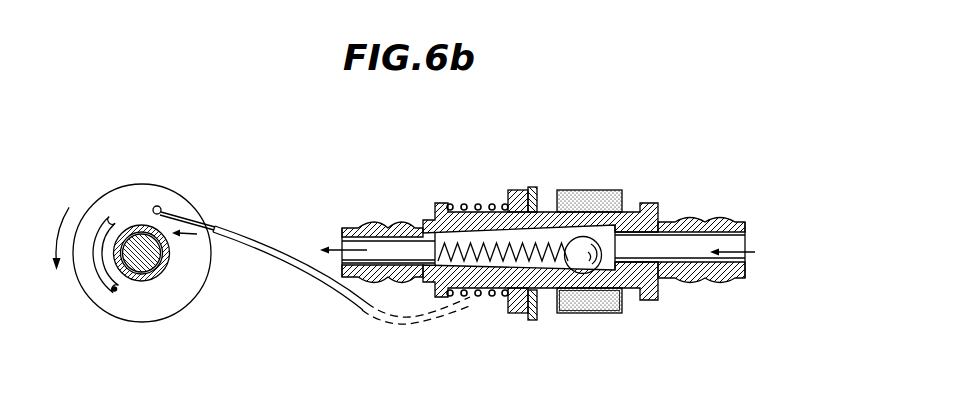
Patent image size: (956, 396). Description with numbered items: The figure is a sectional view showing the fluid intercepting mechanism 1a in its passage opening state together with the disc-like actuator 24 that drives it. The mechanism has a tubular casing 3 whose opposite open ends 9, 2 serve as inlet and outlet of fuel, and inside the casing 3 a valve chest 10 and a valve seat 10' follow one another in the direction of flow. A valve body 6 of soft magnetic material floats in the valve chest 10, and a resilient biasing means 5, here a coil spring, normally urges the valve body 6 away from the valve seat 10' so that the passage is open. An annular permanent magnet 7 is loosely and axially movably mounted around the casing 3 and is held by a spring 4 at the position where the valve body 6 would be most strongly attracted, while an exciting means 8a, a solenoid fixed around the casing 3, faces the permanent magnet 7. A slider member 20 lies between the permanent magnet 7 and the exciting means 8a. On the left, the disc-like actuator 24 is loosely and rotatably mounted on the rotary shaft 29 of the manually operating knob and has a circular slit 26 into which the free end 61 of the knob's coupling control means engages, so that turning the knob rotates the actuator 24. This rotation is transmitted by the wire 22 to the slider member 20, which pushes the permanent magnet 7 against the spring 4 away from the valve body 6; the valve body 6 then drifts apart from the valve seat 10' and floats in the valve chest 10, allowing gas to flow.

The fluid intercepting mechanism 1a is at (569, 166).
The open end 2 is at (377, 222).
The tubular casing 3 is at (430, 219).
The spring 4 is at (463, 204).
The resilient biasing means 5 is at (490, 258).
The valve body 6 is at (570, 308).
The permanent magnet 7 is at (511, 314).
The exciting means 8a is at (610, 192).
The open end 9 is at (713, 220).
The valve chest 10 is at (613, 288).
The valve seat 10' is at (535, 338).
The slider member 20 is at (531, 189).
The wire 22 is at (230, 228).
The disc-like actuator 24 is at (150, 195).
The circular slit 26 is at (105, 218).
The rotary shaft 29 is at (148, 265).
The free end 61 is at (115, 293).